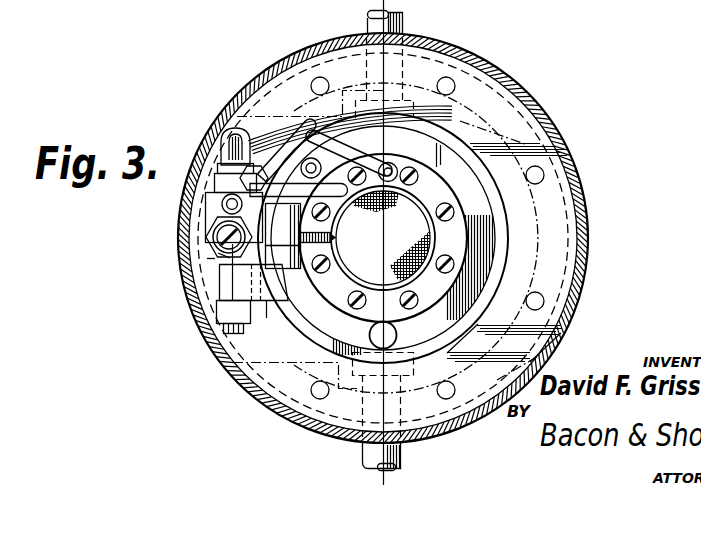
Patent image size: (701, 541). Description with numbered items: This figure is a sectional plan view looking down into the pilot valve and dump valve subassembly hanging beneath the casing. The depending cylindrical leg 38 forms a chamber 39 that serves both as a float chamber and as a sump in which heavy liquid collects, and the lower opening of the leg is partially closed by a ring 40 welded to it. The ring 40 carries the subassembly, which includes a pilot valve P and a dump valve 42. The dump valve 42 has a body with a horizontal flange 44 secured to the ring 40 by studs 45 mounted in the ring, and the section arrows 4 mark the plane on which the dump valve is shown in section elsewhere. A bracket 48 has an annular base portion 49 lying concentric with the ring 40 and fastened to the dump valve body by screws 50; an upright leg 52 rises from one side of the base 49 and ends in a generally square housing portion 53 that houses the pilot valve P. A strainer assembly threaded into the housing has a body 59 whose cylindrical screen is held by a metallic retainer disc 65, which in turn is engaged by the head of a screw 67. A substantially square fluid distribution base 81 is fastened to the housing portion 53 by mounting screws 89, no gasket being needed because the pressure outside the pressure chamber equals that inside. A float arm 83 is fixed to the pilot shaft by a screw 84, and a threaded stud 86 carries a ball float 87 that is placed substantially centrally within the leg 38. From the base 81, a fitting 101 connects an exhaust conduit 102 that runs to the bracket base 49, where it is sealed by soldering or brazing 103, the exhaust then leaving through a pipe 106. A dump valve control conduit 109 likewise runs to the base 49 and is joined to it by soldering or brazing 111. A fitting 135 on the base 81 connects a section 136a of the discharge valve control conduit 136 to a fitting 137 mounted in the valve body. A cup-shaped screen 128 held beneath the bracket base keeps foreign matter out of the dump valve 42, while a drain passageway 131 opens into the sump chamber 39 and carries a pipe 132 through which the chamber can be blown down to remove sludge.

The section line 4- 4 is at (376, 24).
The depending cylindrical leg 38 is at (508, 74).
The chamber 39 is at (527, 118).
The ring 40 is at (508, 228).
The dump valve 42 is at (570, 186).
The horizontal flange 44 is at (574, 292).
The studs 45 is at (324, 81).
The bracket 48 is at (334, 238).
The annular base portion 49 is at (458, 240).
The screws 50 is at (455, 210).
The upright leg 52 is at (216, 306).
The housing portion 53 is at (212, 248).
The strainer body 59 is at (218, 253).
The screen retainer disc 65 is at (208, 233).
The screw 67 is at (208, 269).
The fluid distribution base 81 is at (205, 203).
The float arm 83 is at (266, 318).
The screw 84 is at (222, 297).
The threaded stud 86 is at (283, 257).
The ball float 87 is at (495, 141).
The mounting screws 89 is at (215, 186).
The fitting 101 is at (229, 160).
The exhaust conduit 102 is at (265, 141).
The soldering or brazing 103 is at (393, 163).
The pipe 106 is at (404, 21).
The dump valve control conduit 109 is at (283, 236).
The soldering or brazing 111 is at (340, 208).
The cup-shaped screen 128 is at (418, 210).
The drain passageway 131 is at (397, 335).
The pipe 132 is at (402, 459).
The fitting 135 is at (254, 194).
The discharge valve control conduit 136 is at (296, 130).
The conduit section 136a is at (312, 133).
The fitting 137 is at (343, 161).
The pilot valve P is at (204, 217).